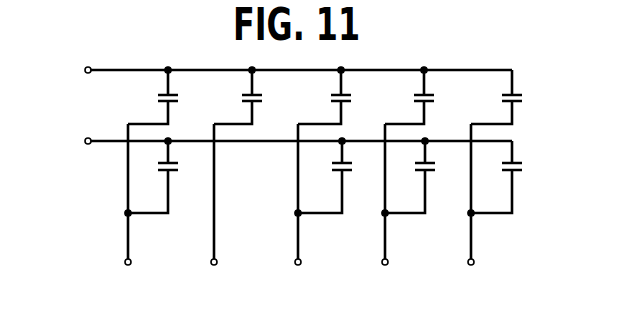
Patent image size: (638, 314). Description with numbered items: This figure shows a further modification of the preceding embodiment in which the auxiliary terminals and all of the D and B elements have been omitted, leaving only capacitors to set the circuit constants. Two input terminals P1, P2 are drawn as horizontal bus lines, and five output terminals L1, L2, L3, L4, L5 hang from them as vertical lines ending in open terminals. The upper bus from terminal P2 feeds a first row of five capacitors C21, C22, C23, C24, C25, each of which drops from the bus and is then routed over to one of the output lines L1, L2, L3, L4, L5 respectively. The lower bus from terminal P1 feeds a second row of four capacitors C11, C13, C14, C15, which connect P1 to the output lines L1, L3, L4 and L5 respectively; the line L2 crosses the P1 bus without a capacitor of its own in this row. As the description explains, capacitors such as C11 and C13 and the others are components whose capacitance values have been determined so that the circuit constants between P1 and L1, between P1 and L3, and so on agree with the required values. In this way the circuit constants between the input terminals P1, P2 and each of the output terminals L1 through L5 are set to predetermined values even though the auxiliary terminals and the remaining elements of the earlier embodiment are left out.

The terminal P1 is at (283, 143).
The terminal P2 is at (283, 72).
The terminal L1 is at (129, 207).
The terminal L2 is at (215, 207).
The terminal L3 is at (300, 207).
The terminal L4 is at (386, 207).
The terminal L5 is at (472, 207).
The capacitor C11 is at (170, 177).
The capacitor C13 is at (340, 177).
The capacitor C14 is at (427, 177).
The capacitor C15 is at (514, 177).
The capacitor C21 is at (171, 97).
The capacitor C22 is at (257, 97).
The capacitor C23 is at (343, 97).
The capacitor C24 is at (430, 97).
The capacitor C25 is at (516, 97).